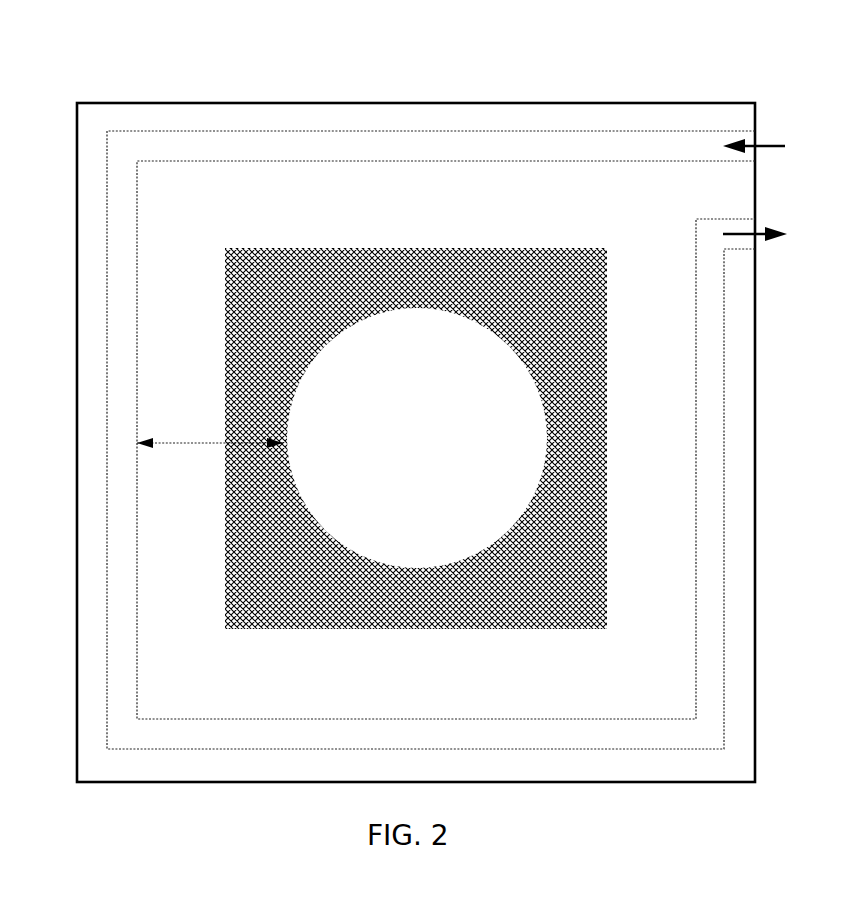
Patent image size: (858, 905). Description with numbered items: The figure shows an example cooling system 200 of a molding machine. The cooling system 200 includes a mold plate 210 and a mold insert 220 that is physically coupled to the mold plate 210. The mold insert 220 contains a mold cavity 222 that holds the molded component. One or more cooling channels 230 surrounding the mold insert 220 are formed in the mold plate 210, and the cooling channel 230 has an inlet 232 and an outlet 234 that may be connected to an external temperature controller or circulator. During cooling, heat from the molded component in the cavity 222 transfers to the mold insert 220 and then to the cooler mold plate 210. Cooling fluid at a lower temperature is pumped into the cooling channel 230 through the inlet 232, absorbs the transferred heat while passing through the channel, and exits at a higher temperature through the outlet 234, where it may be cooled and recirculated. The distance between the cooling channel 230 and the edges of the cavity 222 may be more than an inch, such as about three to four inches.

The cooling system 200 is at (467, 52).
The mold plate 210 is at (532, 103).
The mold insert 220 is at (482, 248).
The mold cavity 222 is at (417, 438).
The cooling channel 230 is at (131, 263).
The inlet 232 is at (768, 136).
The outlet 234 is at (773, 228).